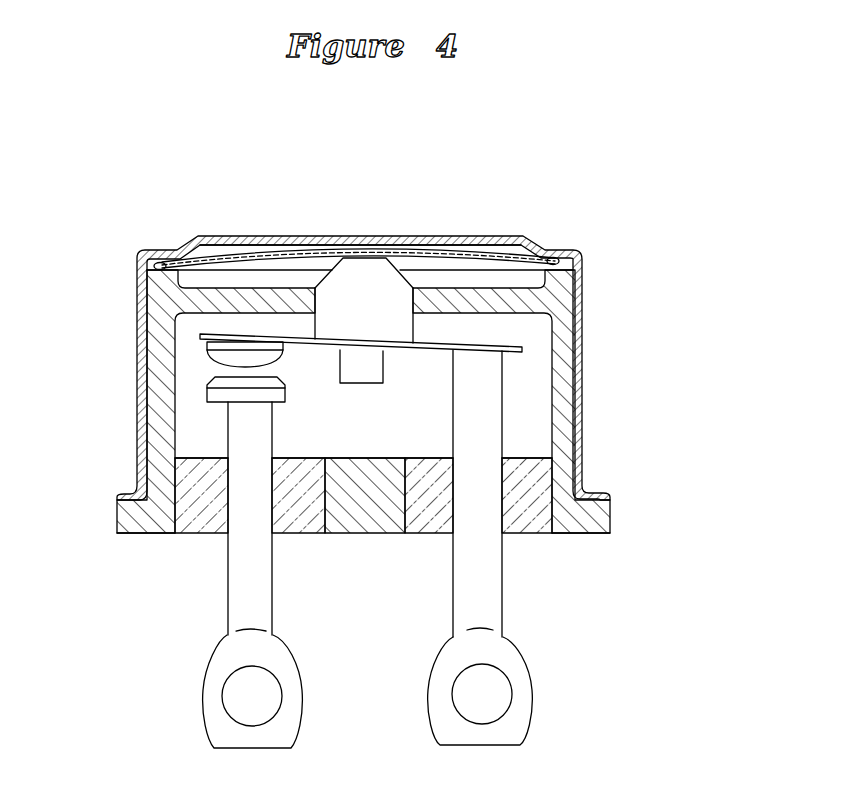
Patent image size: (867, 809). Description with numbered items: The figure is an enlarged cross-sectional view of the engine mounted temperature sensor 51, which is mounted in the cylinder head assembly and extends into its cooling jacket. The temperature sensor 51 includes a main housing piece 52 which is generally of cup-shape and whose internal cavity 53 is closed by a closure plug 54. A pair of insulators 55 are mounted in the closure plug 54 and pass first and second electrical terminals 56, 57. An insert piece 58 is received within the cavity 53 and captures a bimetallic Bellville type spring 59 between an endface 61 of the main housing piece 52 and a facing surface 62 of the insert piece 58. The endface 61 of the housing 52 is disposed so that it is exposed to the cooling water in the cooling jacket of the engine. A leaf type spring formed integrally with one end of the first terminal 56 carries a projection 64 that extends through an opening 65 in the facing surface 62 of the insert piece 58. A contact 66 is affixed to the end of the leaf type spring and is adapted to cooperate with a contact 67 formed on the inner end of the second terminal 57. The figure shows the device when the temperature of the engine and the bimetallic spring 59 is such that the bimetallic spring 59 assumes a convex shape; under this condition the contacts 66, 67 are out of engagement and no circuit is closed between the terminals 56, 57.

The temperature sensor 51 is at (598, 402).
The main housing piece 52 is at (137, 388).
The internal cavity 53 is at (376, 438).
The closure plug 54 is at (150, 533).
The insulators 55 is at (216, 534).
The first electrical terminal 56 is at (525, 665).
The second electrical terminal 57 is at (207, 682).
The insert piece 58 is at (568, 327).
The bimetallic Bellville type spring 59 is at (215, 236).
The endface 61 is at (420, 238).
The facing surface 62 is at (265, 287).
The projection 64 is at (367, 269).
The opening 65 is at (420, 316).
The contact 66 is at (207, 346).
The contact 67 is at (228, 402).